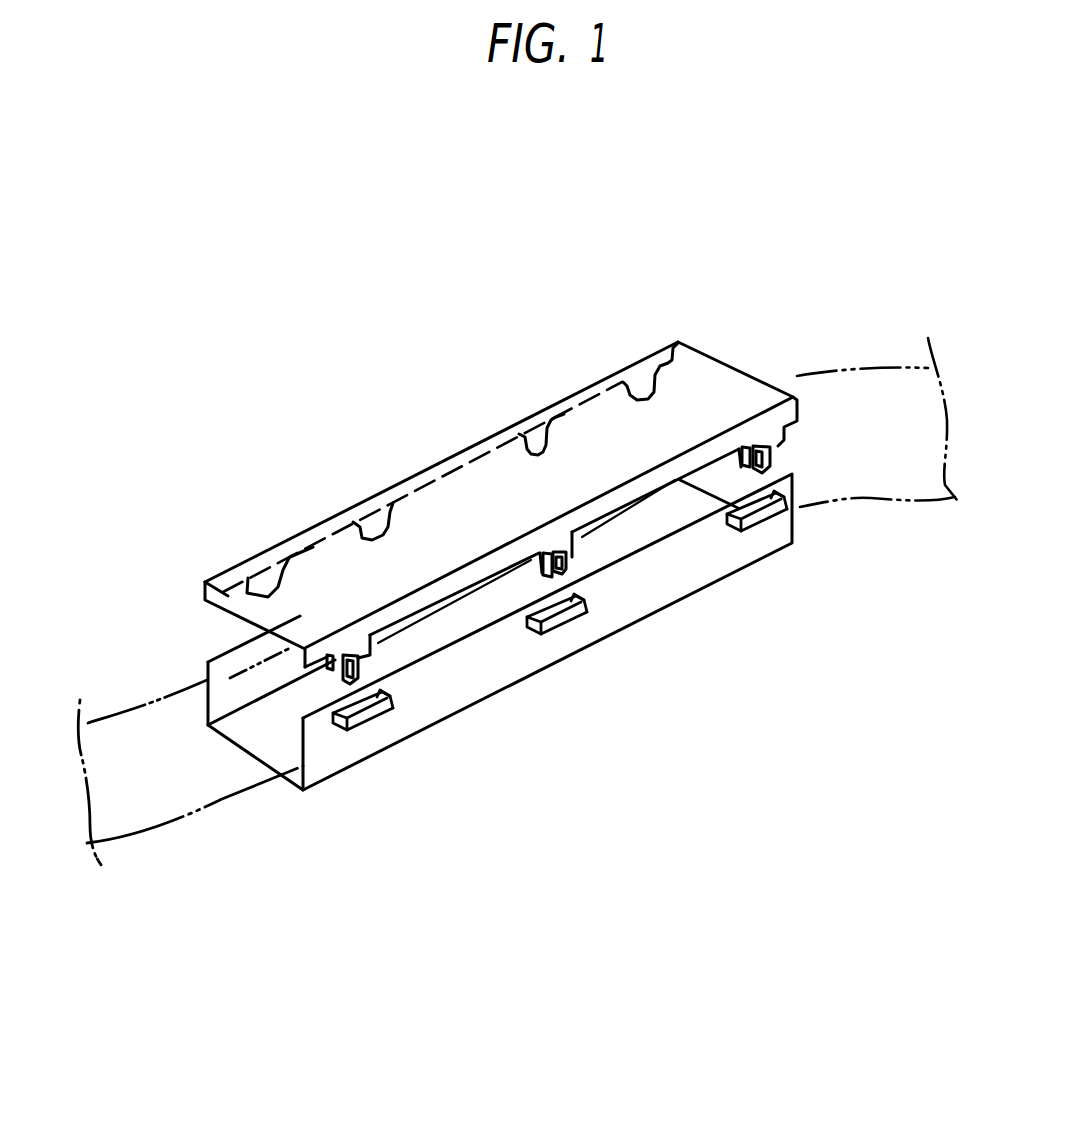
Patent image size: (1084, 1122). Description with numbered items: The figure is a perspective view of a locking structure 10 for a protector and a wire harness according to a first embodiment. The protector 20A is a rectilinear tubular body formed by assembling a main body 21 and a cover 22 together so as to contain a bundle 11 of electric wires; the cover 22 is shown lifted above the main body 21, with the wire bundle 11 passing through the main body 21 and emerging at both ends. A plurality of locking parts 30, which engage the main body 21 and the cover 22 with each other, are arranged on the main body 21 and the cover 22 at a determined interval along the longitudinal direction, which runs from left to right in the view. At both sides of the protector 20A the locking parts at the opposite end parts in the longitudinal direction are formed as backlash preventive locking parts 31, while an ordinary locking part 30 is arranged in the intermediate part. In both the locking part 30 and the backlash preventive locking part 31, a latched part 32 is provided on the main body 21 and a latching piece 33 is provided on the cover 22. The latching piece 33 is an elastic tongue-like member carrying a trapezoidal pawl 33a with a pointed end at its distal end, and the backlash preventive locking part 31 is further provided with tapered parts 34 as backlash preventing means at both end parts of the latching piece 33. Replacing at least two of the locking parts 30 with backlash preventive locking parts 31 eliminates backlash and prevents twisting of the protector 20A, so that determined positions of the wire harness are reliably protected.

The locking structure 10 is at (287, 350).
The bundle of electric wires 11 is at (890, 360).
The protector 20A is at (463, 383).
The main body 21 is at (503, 618).
The cover 22 is at (413, 512).
The locking part 30 is at (353, 488).
The backlash preventive locking part 31 is at (257, 535).
The latched part 32 is at (735, 536).
The latching piece 33 is at (781, 462).
The pawl 33a is at (776, 455).
The tapered part 34 is at (780, 447).